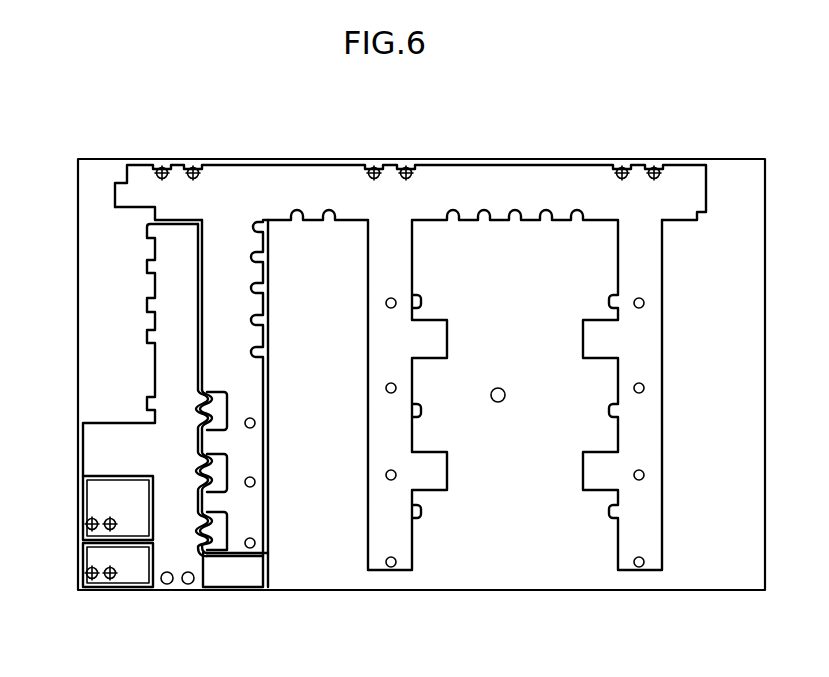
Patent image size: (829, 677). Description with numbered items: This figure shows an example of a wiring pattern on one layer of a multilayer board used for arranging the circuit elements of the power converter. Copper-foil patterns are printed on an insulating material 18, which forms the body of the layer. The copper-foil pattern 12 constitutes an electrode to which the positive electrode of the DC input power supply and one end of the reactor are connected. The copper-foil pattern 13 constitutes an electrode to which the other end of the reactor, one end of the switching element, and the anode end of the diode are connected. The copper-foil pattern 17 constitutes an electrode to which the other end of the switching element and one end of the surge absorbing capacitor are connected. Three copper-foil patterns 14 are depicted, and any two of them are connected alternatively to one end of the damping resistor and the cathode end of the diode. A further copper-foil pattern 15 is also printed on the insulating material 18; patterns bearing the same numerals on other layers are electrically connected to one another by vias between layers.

The copper-foil pattern 12 is at (93, 500).
The copper-foil pattern 13 is at (93, 448).
The copper-foil patterns 14 is at (215, 398).
The copper-foil pattern 15 is at (253, 190).
The copper-foil pattern 17 is at (93, 555).
The insulating material 18 is at (507, 563).